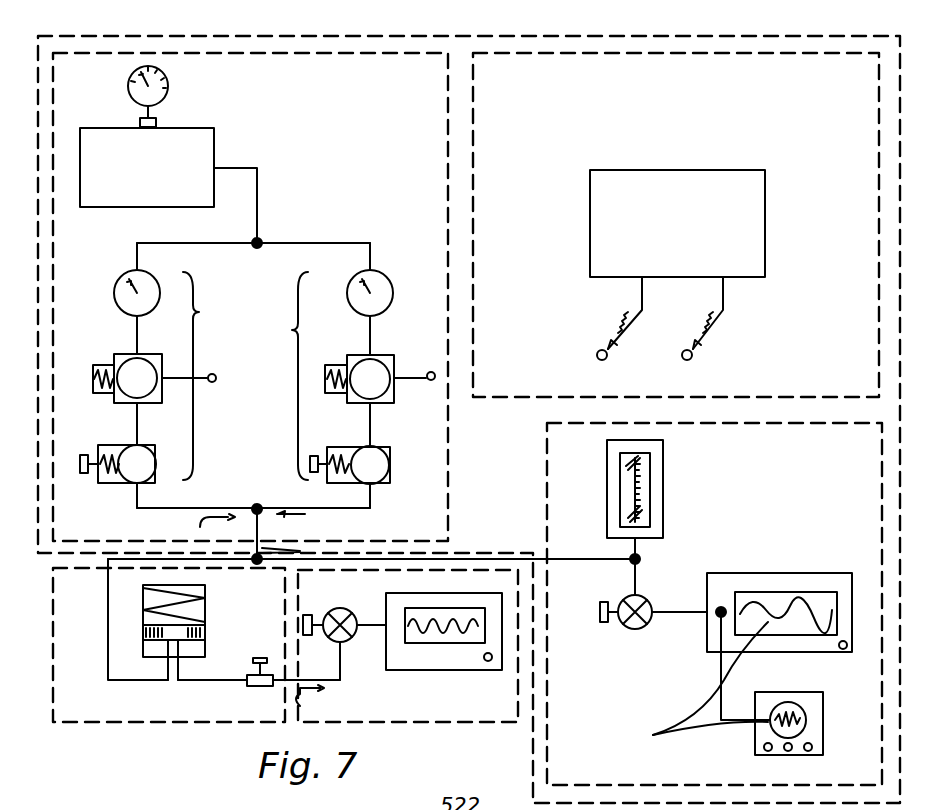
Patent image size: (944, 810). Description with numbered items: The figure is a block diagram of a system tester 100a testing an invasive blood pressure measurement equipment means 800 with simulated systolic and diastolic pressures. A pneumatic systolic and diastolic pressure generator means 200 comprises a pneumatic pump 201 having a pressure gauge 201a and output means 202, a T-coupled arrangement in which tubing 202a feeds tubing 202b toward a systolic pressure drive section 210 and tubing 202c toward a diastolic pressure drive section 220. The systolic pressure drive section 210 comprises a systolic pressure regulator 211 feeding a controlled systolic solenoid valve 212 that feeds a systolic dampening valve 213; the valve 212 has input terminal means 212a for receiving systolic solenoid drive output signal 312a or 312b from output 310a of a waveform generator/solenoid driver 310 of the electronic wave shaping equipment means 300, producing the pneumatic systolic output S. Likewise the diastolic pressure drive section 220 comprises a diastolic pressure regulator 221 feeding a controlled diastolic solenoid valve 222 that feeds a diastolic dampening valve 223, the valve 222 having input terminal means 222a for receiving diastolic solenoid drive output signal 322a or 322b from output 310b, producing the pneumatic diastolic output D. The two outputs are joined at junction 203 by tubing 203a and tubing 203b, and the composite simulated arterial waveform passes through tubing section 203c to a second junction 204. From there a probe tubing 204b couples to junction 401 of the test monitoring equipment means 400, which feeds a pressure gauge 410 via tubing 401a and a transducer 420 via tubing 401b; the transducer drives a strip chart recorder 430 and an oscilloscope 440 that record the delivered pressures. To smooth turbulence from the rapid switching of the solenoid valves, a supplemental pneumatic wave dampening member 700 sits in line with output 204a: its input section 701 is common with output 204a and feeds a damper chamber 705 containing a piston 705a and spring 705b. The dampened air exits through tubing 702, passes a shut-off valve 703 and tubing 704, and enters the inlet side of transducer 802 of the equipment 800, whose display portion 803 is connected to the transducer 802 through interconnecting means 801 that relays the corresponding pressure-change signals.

The system tester 100a is at (458, 28).
The pneumatic systolic and diastolic pressure generator means 200 is at (408, 97).
The pneumatic pump 201 is at (214, 143).
The pressure gauge 201a is at (168, 86).
The output means 202 is at (285, 230).
The tubing 202a is at (257, 193).
The tubing 202b is at (157, 243).
The tubing 202c is at (340, 244).
The junction 203 is at (257, 504).
The tubing 203a is at (178, 508).
The tubing 203b is at (280, 509).
The tubing section 203c is at (260, 534).
The second junction 204 is at (257, 562).
The output 204a is at (155, 559).
The probe tubing 204b is at (460, 559).
The systolic pressure drive section 210 is at (193, 390).
The systolic pressure regulator 211 is at (119, 273).
The controlled systolic solenoid valve 212 is at (125, 354).
The input terminal means 212a is at (214, 382).
The systolic dampening valve 213 is at (127, 447).
The diastolic pressure drive section 220 is at (306, 390).
The diastolic pressure regulator 221 is at (388, 281).
The controlled diastolic solenoid valve 222 is at (383, 355).
The input terminal means 222a is at (433, 381).
The diastolic dampening valve 223 is at (378, 482).
The electronic wave shaping equipment means 300 is at (838, 97).
The waveform generator/solenoid driver 310 is at (765, 193).
The output 310a is at (640, 290).
The output 310b is at (723, 293).
The systolic solenoid drive output signal 312a is at (606, 323).
The systolic solenoid drive output signal 312b is at (572, 356).
The diastolic solenoid drive output signal 322a is at (731, 336).
The diastolic solenoid drive output signal 322b is at (766, 363).
The test monitoring equipment means 400 is at (840, 463).
The junction 401 is at (625, 564).
The tubing 401a is at (640, 556).
The tubing 401b is at (638, 580).
The pressure gauge 410 is at (663, 481).
The transducer 420 is at (627, 637).
The strip chart recorder 430 is at (760, 573).
The oscilloscope 440 is at (778, 692).
The supplemental pneumatic wave dampening member 700 is at (172, 714).
The input section 701 is at (108, 620).
The tubing 702 is at (190, 678).
The shut-off valve 703 is at (266, 688).
The tubing 704 is at (296, 670).
The damper chamber 705 is at (155, 650).
The piston 705a is at (143, 634).
The spring 705b is at (143, 592).
The invasive blood pressure measurement equipment means 800 is at (514, 712).
The interconnecting means 801 is at (378, 628).
The transducer 802 is at (332, 612).
The display portion 803 is at (428, 593).